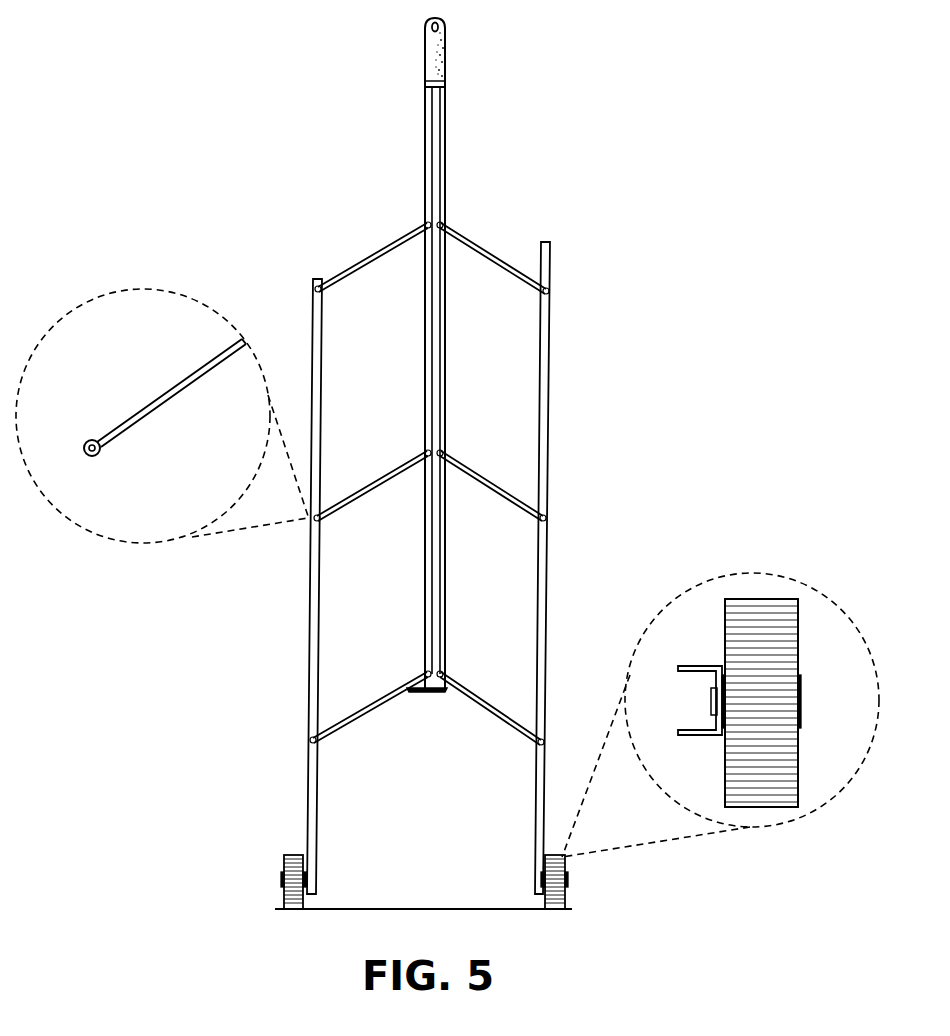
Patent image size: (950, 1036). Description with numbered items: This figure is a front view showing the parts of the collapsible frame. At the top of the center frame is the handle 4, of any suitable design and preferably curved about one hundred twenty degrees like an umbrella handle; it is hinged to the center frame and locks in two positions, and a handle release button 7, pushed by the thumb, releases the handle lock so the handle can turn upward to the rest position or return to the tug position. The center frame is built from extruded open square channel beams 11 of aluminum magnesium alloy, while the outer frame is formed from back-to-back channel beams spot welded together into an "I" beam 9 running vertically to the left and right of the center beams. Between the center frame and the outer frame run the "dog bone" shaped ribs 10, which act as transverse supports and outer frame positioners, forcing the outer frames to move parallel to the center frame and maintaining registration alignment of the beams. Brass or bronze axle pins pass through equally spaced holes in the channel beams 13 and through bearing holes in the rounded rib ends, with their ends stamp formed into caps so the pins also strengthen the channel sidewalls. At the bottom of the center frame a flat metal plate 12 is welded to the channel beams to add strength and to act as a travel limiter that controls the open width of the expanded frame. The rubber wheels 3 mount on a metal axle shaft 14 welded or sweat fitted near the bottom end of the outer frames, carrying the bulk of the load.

The wheels 3 is at (293, 857).
The handle 4 is at (425, 63).
The handle release button 7 is at (430, 27).
The "I" beam 9 is at (548, 425).
The ribs 10 is at (497, 257).
The open square channel beams 11 is at (425, 183).
The flat metal plate 12 is at (428, 693).
The holes in the channel beams 13 is at (441, 222).
The axle shaft 14 is at (282, 879).